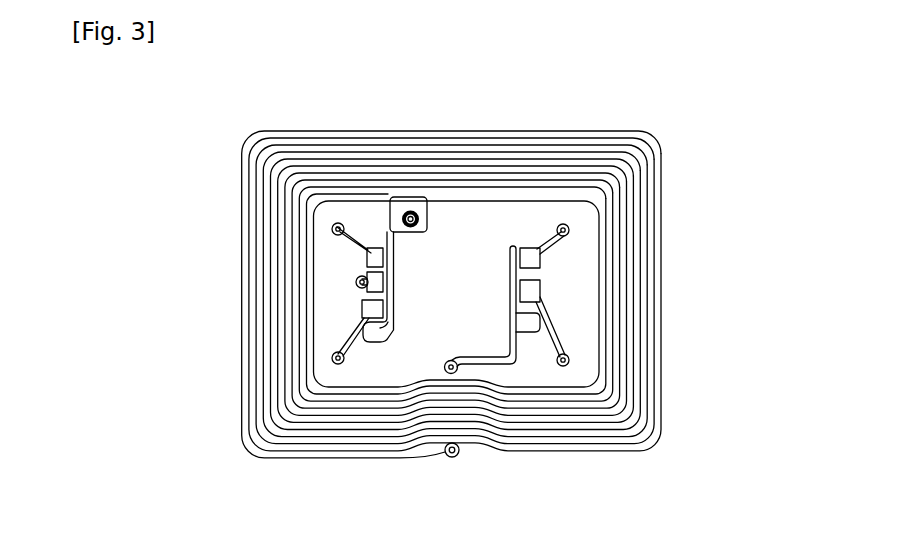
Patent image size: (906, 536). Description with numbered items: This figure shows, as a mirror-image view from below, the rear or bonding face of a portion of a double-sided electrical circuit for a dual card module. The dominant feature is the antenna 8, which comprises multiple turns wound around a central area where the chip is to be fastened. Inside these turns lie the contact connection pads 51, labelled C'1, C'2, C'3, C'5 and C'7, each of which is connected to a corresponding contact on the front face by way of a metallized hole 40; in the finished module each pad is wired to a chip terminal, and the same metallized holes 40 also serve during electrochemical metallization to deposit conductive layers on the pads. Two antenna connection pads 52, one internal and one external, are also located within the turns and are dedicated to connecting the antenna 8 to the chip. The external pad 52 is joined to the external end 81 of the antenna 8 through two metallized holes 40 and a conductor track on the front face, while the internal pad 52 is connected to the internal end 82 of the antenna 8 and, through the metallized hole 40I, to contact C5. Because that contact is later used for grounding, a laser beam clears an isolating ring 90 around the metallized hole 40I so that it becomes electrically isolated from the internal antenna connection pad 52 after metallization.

The antenna 8 is at (661, 326).
The metallized hole 40 is at (362, 280).
The metallized hole 40I is at (411, 210).
The internal end of the antenna 82 is at (420, 208).
The isolating ring 90 is at (428, 220).
The external end of the antenna 81 is at (443, 457).
The antenna connection pad 52 is at (530, 327).
The contact connection pad 51 is at (192, 236).
The connection pad C'1 is at (289, 247).
The connection pad C'2 is at (289, 285).
The connection pad C'3 is at (289, 328).
The connection pad C'5 is at (615, 244).
The connection pad C'7 is at (615, 310).